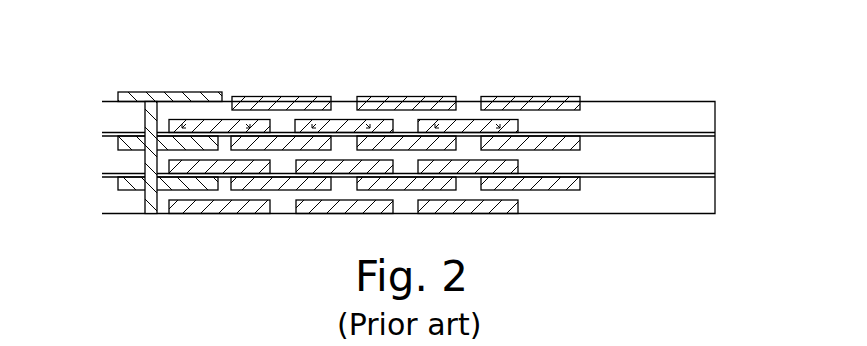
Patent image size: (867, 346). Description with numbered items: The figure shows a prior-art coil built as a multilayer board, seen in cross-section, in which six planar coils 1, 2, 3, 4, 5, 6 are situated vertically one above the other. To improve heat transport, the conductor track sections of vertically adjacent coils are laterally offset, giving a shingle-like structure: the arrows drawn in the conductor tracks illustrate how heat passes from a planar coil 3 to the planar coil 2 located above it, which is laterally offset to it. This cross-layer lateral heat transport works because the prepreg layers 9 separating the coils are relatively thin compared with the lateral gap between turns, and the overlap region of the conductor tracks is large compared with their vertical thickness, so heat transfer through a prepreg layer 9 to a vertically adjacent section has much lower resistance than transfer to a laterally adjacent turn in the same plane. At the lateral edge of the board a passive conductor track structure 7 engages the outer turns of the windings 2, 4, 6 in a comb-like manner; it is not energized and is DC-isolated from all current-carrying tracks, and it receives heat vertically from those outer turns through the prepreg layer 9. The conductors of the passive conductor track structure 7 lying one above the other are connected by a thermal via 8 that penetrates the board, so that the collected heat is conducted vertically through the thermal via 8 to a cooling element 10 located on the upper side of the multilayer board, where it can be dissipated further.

The planar coil 1 is at (584, 108).
The planar coil 2 is at (557, 122).
The planar coil 3 is at (603, 142).
The planar coil 4 is at (538, 160).
The planar coil 5 is at (580, 184).
The planar coil 6 is at (518, 210).
The passive conductor track structure 7 is at (118, 149).
The thermal via 8 is at (143, 116).
The prepreg layer 9 is at (703, 176).
The cooling element 10 is at (184, 93).